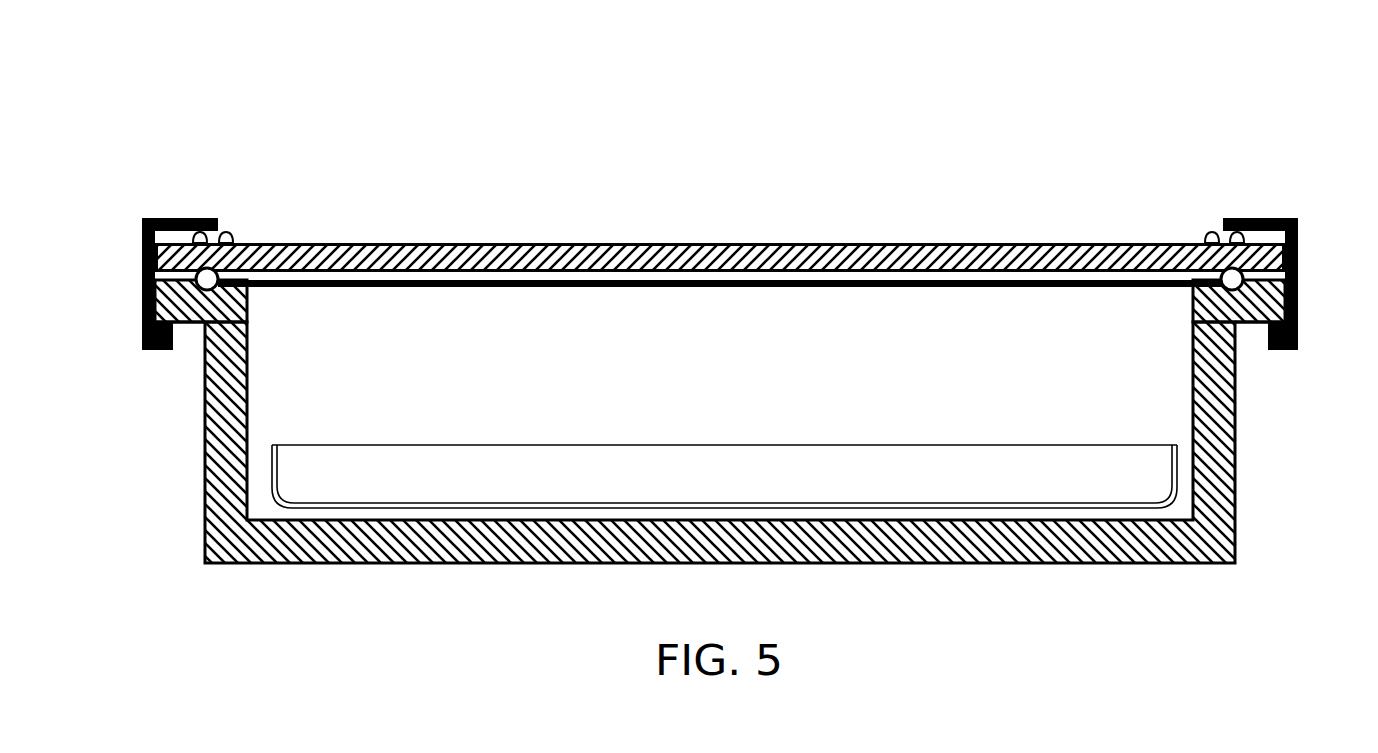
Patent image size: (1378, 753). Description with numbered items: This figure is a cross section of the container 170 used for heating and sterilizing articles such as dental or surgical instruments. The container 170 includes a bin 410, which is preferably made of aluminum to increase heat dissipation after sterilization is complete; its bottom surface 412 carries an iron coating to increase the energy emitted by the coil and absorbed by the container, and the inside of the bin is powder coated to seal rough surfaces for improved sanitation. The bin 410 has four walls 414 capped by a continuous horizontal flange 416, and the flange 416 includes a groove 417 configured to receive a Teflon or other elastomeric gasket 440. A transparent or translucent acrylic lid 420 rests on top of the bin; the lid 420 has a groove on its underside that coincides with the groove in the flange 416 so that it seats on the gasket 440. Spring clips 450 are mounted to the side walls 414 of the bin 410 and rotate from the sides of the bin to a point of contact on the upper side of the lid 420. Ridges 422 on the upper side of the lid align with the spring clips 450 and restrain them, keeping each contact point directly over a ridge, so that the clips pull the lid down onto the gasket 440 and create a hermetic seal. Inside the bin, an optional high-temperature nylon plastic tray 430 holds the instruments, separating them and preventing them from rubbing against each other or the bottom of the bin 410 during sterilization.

The container 170 is at (463, 142).
The bin 410 is at (203, 563).
The bottom surface 412 is at (942, 563).
The walls 414 is at (205, 493).
The horizontal flange 416 is at (190, 325).
The groove 417 is at (248, 340).
The lid 420 is at (765, 243).
The ridges 422 is at (228, 232).
The tray 430 is at (595, 465).
The gasket 440 is at (222, 291).
The spring clips 450 is at (180, 218).